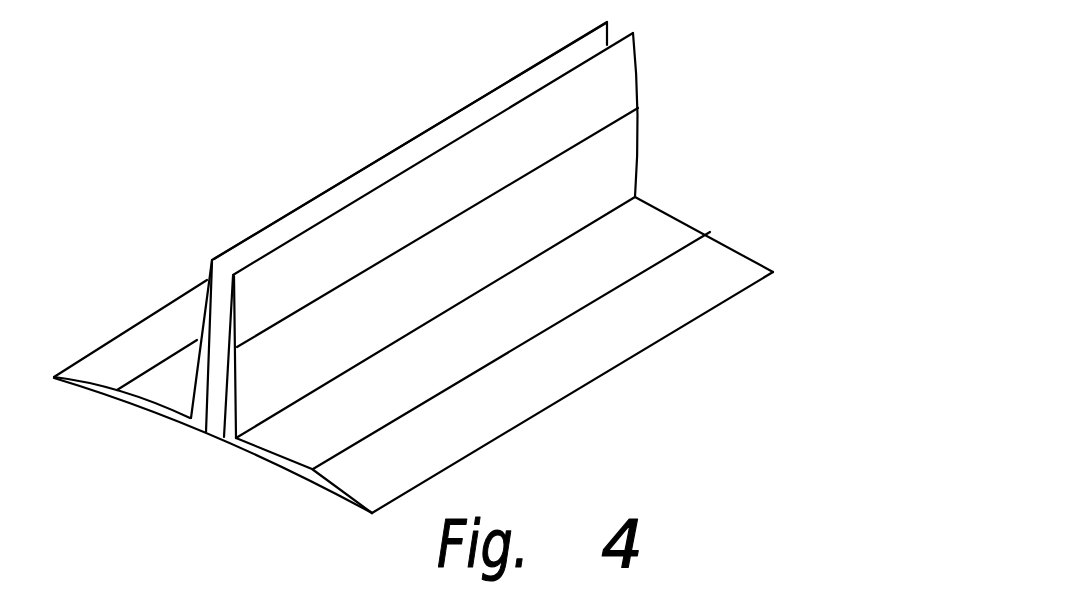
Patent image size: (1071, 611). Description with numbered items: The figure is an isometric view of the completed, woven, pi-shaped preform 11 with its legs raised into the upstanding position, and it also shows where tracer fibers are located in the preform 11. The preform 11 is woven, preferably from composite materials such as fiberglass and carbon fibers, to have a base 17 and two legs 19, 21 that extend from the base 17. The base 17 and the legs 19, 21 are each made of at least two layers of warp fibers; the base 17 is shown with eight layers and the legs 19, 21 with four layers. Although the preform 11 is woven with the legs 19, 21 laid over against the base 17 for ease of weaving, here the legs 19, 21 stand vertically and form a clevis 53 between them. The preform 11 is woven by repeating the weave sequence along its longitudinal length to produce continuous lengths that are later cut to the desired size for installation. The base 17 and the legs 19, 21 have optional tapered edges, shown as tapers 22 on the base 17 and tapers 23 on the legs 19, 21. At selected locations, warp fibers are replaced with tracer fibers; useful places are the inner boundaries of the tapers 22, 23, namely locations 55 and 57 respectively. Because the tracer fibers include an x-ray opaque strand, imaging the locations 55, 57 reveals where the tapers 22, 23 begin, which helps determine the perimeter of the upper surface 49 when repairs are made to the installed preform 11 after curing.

The preform 11 is at (166, 451).
The base 17 is at (272, 481).
The leg 19 is at (190, 400).
The leg 21 is at (222, 403).
The taper 22 is at (690, 305).
The taper 23 is at (622, 82).
The upper surface 49 is at (678, 228).
The clevis 53 is at (481, 104).
The location 55 is at (688, 244).
The location 57 is at (402, 250).